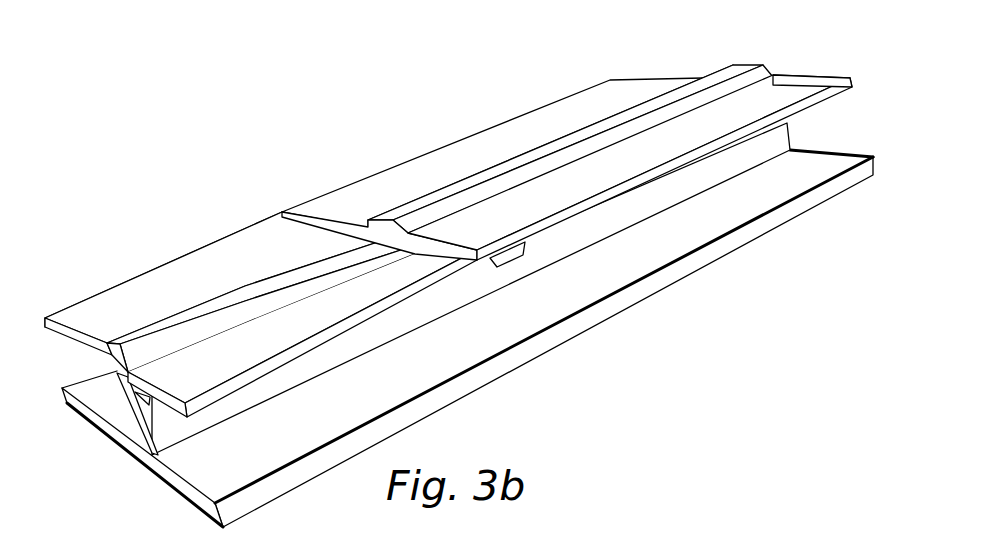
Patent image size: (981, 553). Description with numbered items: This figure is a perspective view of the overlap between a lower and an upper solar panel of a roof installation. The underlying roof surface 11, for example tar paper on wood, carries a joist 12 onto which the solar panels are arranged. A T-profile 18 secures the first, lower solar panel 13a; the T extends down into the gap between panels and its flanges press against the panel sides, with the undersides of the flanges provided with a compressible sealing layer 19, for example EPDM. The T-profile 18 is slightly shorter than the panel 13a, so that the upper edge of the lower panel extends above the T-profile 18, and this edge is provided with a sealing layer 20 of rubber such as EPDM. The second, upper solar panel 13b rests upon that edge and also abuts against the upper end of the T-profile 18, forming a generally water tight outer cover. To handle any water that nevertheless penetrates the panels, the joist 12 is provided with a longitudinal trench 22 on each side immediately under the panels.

The roof surface 11 is at (568, 328).
The joist 12 is at (618, 210).
The first, lower solar panel 13a is at (283, 245).
The second, upper solar panel 13b is at (520, 130).
The T-profile 18 is at (177, 325).
The compressible sealing layer 19 is at (243, 317).
The sealing layer 20 is at (490, 258).
The longitudinal trench 22 is at (136, 394).